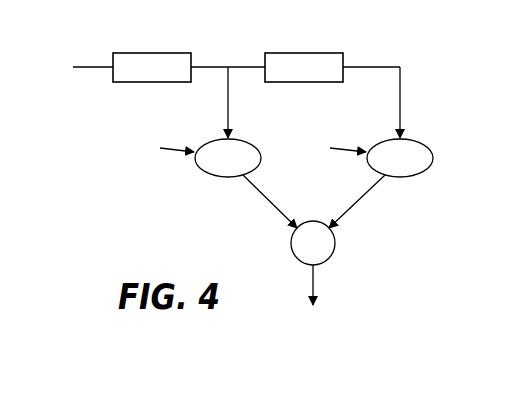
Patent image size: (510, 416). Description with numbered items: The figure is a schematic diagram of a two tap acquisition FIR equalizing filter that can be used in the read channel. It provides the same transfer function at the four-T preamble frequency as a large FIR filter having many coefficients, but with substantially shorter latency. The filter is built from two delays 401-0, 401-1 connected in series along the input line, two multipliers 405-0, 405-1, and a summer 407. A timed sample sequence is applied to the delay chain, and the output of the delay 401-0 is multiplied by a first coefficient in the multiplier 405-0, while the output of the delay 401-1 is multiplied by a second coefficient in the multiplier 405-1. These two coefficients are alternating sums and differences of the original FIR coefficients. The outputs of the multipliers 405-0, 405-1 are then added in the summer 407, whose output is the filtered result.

The delay 401-0 is at (133, 53).
The delay 401-1 is at (292, 53).
The multiplier 405-0 is at (205, 142).
The multiplier 405-1 is at (375, 142).
The summer 407 is at (336, 243).